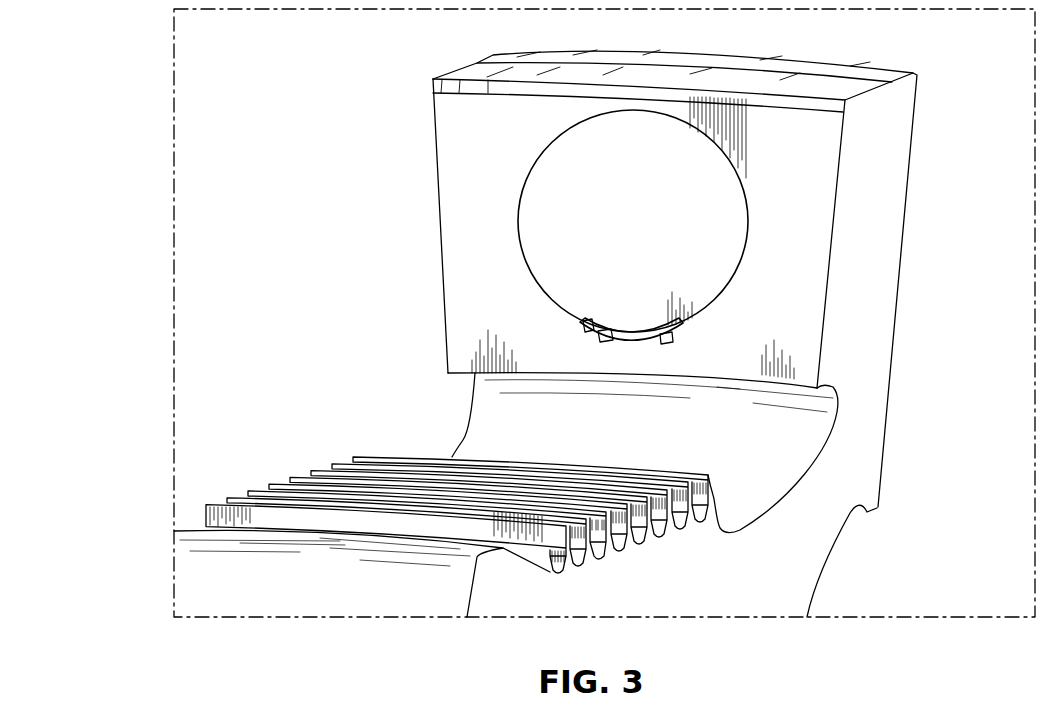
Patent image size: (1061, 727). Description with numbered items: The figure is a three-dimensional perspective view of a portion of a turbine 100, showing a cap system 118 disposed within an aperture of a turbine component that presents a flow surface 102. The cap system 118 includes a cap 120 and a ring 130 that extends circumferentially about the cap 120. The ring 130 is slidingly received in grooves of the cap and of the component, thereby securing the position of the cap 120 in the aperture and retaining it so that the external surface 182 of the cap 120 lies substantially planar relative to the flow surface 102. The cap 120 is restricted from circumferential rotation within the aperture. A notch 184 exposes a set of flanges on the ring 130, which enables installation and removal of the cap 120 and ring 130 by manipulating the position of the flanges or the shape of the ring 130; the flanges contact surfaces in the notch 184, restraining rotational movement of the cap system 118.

The turbine 100 is at (938, 124).
The flow surface 102 is at (802, 152).
The cap system 118 is at (496, 190).
The cap 120 is at (620, 219).
The external surface 182 is at (645, 242).
The ring 130 is at (666, 347).
The notch 184 is at (630, 365).